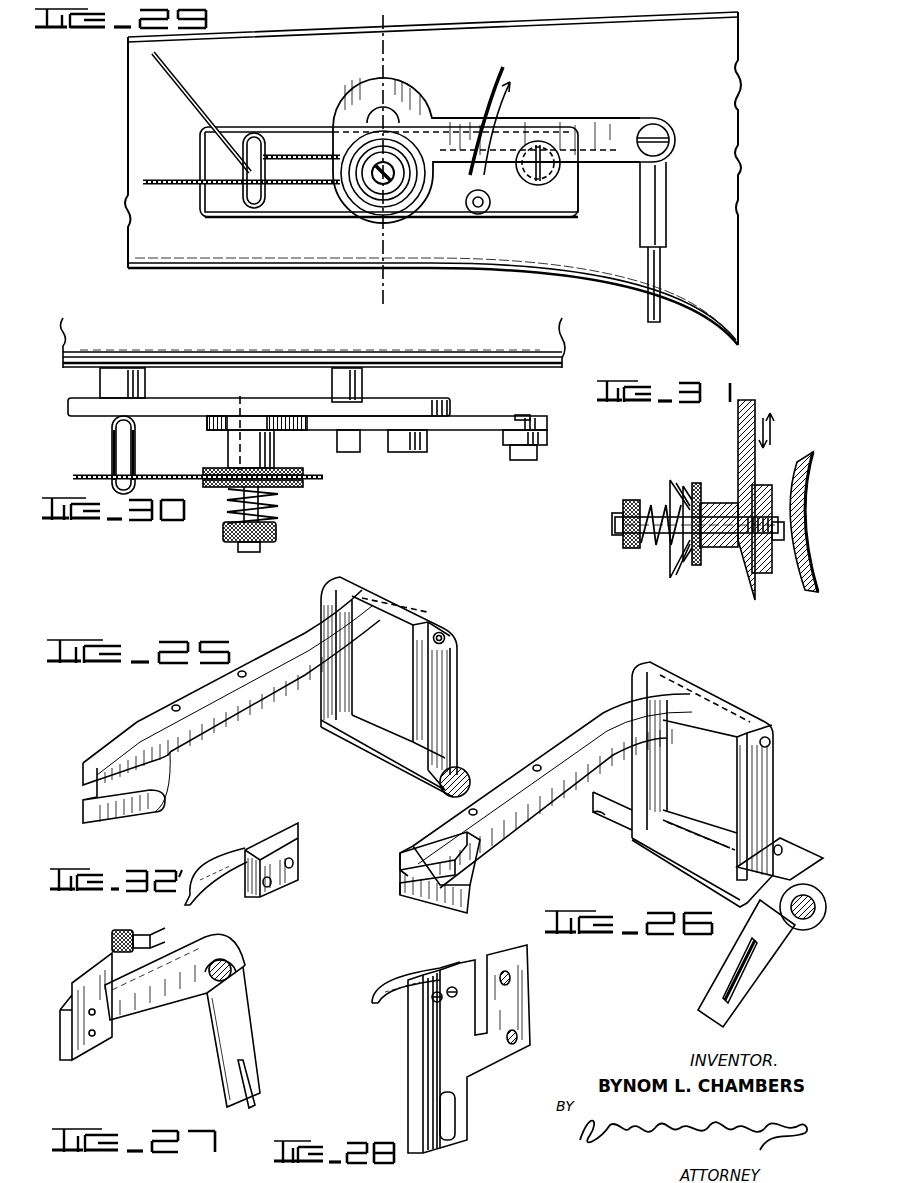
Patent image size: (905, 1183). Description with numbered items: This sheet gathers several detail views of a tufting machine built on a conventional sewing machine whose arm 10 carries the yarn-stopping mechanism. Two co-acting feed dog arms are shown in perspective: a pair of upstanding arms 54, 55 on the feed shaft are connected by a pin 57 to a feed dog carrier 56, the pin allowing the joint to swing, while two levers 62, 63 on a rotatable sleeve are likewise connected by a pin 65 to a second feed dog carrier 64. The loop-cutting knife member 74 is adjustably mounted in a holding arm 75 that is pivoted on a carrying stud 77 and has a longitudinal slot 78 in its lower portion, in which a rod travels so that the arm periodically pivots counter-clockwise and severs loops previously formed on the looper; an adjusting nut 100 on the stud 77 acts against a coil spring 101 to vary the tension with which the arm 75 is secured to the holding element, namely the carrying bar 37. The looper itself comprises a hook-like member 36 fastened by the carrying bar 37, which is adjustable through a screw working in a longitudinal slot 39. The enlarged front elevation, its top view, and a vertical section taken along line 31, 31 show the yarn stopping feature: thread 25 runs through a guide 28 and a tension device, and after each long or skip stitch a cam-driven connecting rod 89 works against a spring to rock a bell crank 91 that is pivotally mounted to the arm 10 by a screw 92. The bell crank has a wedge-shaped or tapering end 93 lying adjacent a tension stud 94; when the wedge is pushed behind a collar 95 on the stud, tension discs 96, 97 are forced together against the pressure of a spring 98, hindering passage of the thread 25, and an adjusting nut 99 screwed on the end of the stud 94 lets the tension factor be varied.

In FIG. 29, the arm of the sewing machine 10 is at (353, 38).
In FIG. 30, the arm of the sewing machine 10 is at (491, 347).
In FIG. 31, the arm of the sewing machine 10 is at (812, 456).
In FIG. 29, the thread 25 is at (207, 86).
In FIG. 30, the thread 25 is at (157, 475).
In FIG. 31, the thread 25 is at (692, 500).
In FIG. 29, the guide 28 is at (256, 133).
In FIG. 30, the guide 28 is at (112, 455).
In FIG. 29, the line 31— 31 is at (416, 38).
In FIG. 32', the hook-like member 36 is at (200, 858).
In FIG. 28, the hook-like member 36 is at (381, 984).
In FIG. 28, the carrying bar 37 is at (410, 1068).
In FIG. 28, the longitudinal slot 39 is at (455, 1118).
In FIG. 25, the upstanding arm 54 is at (349, 678).
In FIG. 25, the upstanding arm 55 is at (450, 704).
In FIG. 25, the feed dog carrier 56 is at (265, 657).
In FIG. 25, the pin 57 is at (452, 641).
In FIG. 26, the lever 62 is at (664, 780).
In FIG. 26, the lever 63 is at (768, 797).
In FIG. 26, the feed dog carrier 64 is at (567, 754).
In FIG. 26, the pin 65 is at (772, 742).
In FIG. 27, the knife member 74 is at (94, 968).
In FIG. 27, the holding arm 75 is at (160, 1007).
In FIG. 27, the carrying stud 77 is at (236, 968).
In FIG. 27, the longitudinal slot 78 is at (255, 1072).
In FIG. 29, the connecting rod 89 is at (648, 300).
In FIG. 29, the bell crank 91 is at (617, 128).
In FIG. 29, the screw 92 is at (538, 141).
In FIG. 30, the screw 92 is at (409, 451).
In FIG. 29, the wedge-shaped end 93 is at (353, 101).
In FIG. 31, the wedge-shaped end 93 is at (755, 592).
In FIG. 30, the tension stud 94 is at (270, 499).
In FIG. 31, the tension stud 94 is at (718, 548).
In FIG. 30, the collar 95 is at (230, 456).
In FIG. 31, the collar 95 is at (712, 503).
In FIG. 30, the tension disc 96 is at (301, 470).
In FIG. 31, the tension disc 96 is at (697, 565).
In FIG. 30, the tension disc 97 is at (212, 489).
In FIG. 31, the tension disc 97 is at (672, 556).
In FIG. 30, the spring 98 is at (270, 516).
In FIG. 31, the spring 98 is at (652, 510).
In FIG. 30, the adjusting nut 99 is at (276, 540).
In FIG. 31, the adjusting nut 99 is at (623, 541).
In FIG. 27, the adjusting nut 100 is at (124, 933).
In FIG. 27, the coil spring 101 is at (146, 936).